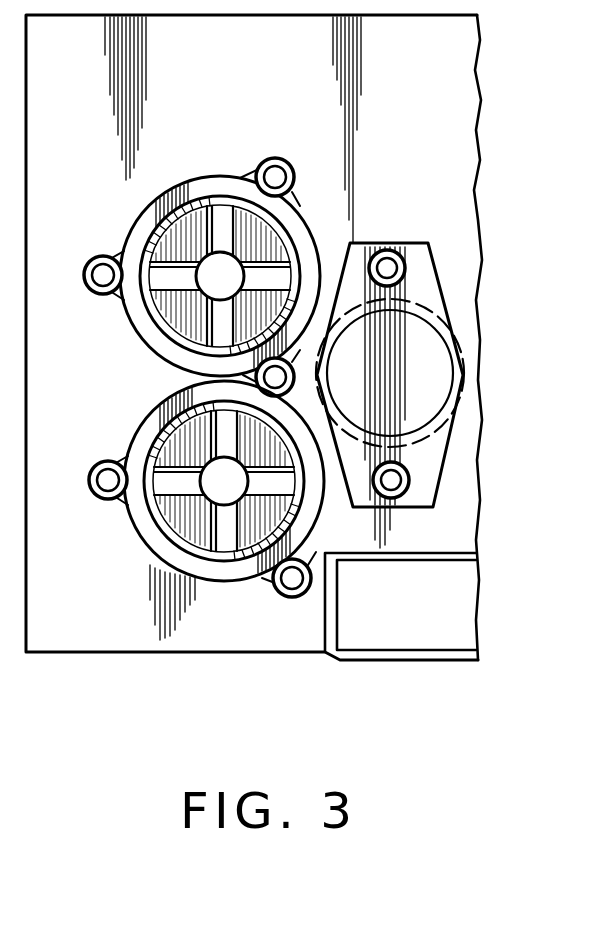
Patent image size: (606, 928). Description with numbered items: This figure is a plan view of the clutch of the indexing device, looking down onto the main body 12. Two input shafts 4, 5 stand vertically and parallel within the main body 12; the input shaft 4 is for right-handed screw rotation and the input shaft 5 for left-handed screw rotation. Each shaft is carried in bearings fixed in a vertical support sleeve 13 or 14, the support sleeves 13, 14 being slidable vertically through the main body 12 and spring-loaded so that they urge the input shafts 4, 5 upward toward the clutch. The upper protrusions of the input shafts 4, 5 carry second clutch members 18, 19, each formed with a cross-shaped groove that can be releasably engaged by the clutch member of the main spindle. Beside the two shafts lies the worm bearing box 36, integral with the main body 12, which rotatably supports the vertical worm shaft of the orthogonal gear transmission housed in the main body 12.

The input shaft 4 is at (147, 312).
The input shaft 5 is at (143, 522).
The main body 12 is at (472, 237).
The support sleeve 13 is at (151, 202).
The support sleeve 14 is at (137, 426).
The second clutch member 18 is at (221, 208).
The second clutch member 19 is at (230, 548).
The worm bearing box 36 is at (468, 365).